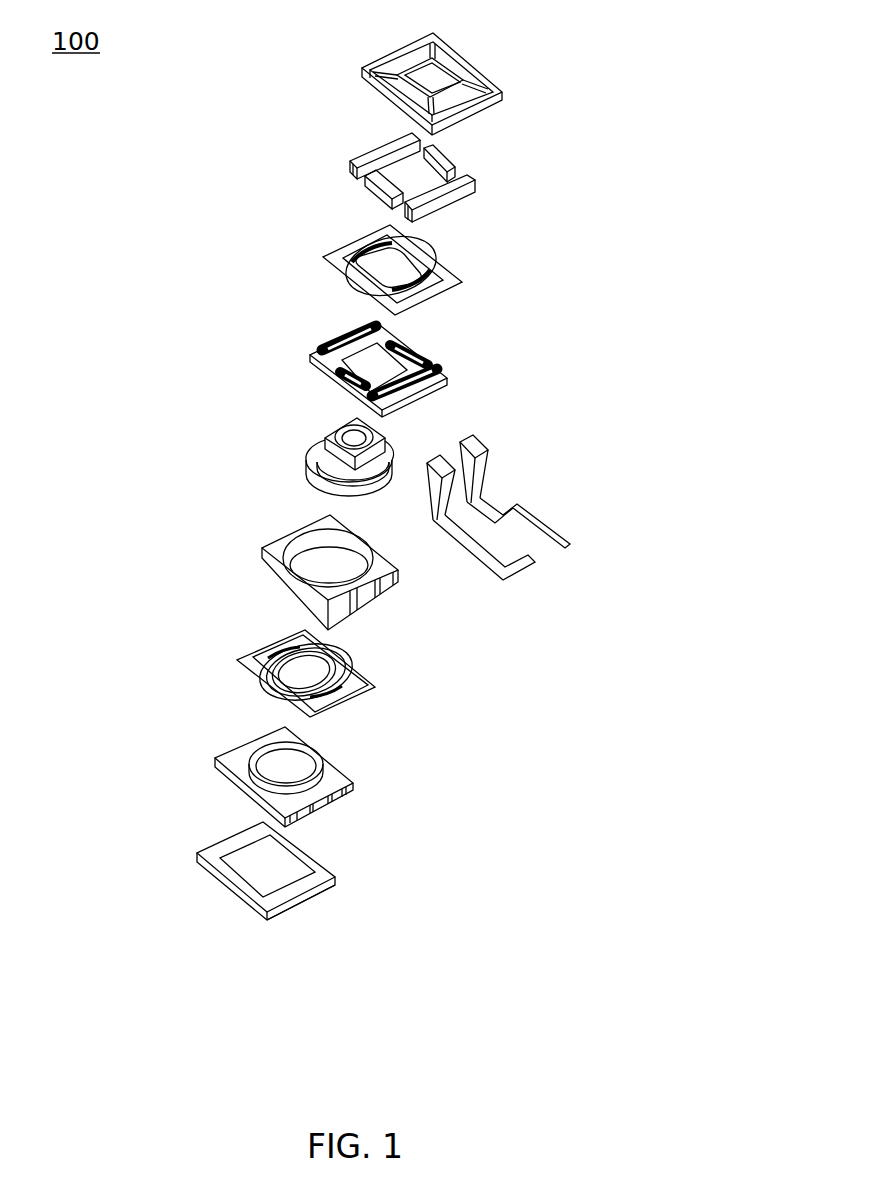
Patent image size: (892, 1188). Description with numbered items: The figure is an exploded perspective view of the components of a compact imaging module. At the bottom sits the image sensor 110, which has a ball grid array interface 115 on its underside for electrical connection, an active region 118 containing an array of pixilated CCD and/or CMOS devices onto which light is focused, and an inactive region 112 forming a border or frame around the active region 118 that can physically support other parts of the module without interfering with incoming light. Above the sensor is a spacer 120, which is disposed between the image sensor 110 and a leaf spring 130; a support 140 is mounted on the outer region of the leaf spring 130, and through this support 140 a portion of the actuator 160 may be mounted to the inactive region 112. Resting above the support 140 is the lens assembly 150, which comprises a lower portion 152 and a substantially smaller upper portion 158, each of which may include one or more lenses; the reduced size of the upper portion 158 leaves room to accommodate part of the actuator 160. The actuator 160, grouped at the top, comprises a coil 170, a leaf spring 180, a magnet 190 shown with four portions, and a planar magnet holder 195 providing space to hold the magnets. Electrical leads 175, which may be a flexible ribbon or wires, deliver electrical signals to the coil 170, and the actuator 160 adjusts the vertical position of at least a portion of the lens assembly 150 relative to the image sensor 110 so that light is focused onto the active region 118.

The image sensor 110 is at (247, 877).
The inactive region 112 is at (207, 853).
The ball grid array interface 115 is at (318, 897).
The active region 118 is at (248, 875).
The spacer 120 is at (350, 788).
The leaf spring 130 is at (255, 663).
The support 140 is at (267, 557).
The lens assembly 150 is at (243, 420).
The lower portion 152 is at (318, 468).
The upper portion 158 is at (342, 422).
The actuator 160 is at (380, 5).
The coil 170 is at (443, 382).
The electrical leads 175 is at (513, 507).
The leaf spring 180 is at (453, 282).
The magnet 190 is at (453, 200).
The magnet holder 195 is at (482, 112).